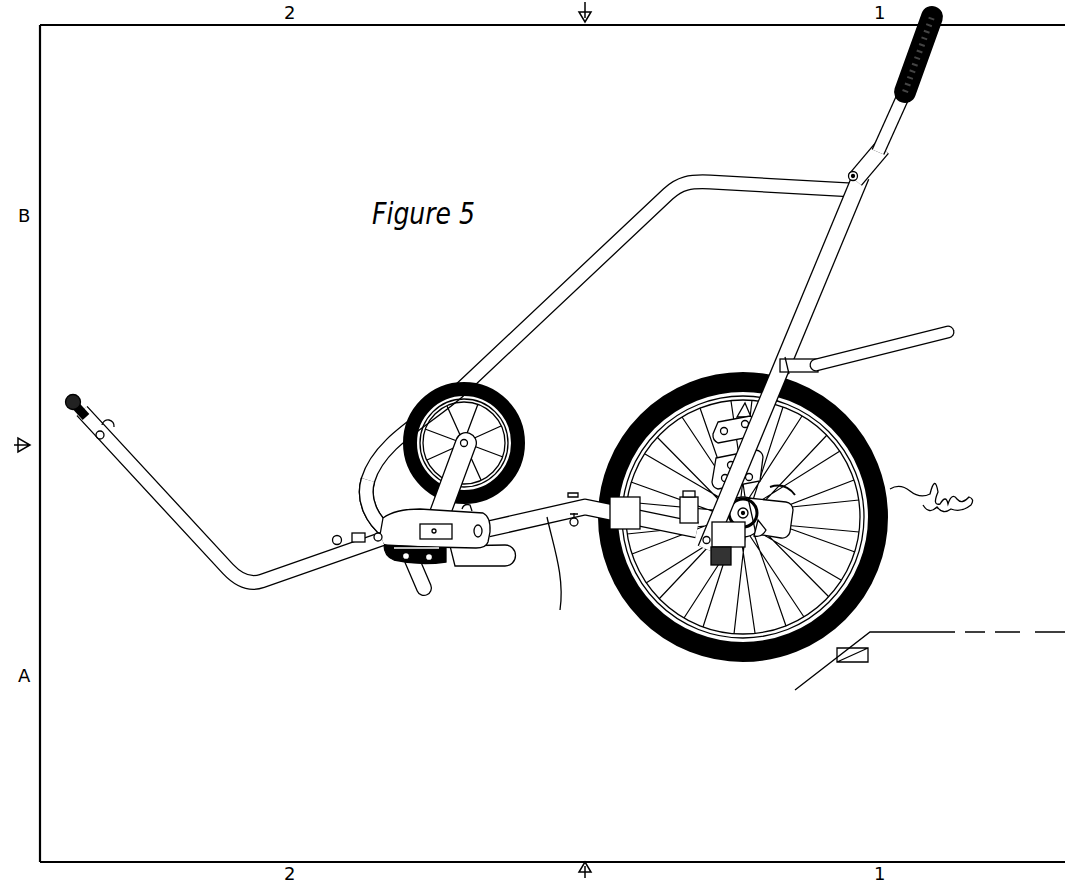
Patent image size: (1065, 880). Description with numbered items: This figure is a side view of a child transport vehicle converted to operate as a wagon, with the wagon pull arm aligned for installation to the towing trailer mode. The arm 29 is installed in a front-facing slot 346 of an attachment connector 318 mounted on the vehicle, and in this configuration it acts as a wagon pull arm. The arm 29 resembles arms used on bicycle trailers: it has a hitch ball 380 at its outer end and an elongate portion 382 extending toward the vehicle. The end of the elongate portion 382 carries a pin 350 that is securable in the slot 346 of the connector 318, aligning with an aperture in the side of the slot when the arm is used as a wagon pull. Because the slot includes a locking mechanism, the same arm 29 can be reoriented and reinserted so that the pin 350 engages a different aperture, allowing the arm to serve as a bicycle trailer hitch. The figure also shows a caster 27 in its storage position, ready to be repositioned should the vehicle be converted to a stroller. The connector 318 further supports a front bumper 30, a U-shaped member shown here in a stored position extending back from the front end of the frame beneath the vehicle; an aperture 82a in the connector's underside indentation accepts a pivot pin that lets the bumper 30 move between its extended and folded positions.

The caster 27 is at (400, 467).
The wagon pull arm 29 is at (296, 561).
The front bumper 30 is at (500, 562).
The aperture 82a is at (434, 549).
The attachment connector 318 is at (450, 560).
The front-facing slot 346 is at (367, 530).
The pin 350 is at (380, 553).
The hitch ball 380 is at (74, 393).
The elongate portion 382 is at (340, 553).